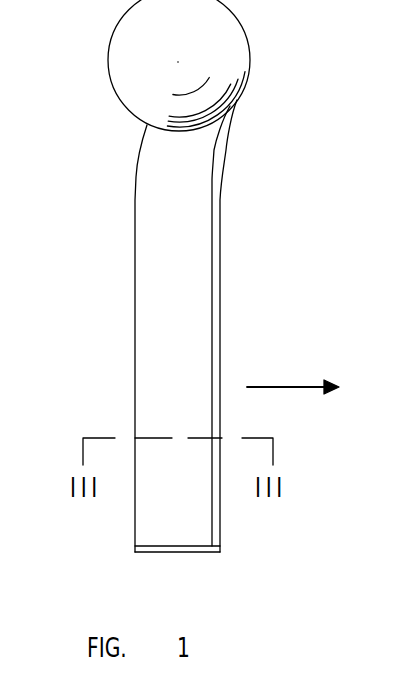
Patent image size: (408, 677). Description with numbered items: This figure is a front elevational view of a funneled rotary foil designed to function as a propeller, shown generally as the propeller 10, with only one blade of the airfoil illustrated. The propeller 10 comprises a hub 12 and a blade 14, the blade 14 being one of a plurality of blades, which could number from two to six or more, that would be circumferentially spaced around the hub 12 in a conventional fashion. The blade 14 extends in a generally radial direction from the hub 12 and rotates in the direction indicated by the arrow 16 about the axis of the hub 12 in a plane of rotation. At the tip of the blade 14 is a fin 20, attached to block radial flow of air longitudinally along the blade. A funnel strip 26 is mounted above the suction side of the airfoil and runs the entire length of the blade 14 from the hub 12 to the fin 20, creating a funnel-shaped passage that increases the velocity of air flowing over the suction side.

The propeller 10 is at (167, 300).
The hub 12 is at (108, 61).
The blade 14 is at (136, 333).
The arrow 16 is at (293, 400).
The fin 20 is at (160, 553).
The funnel strip 26 is at (218, 273).